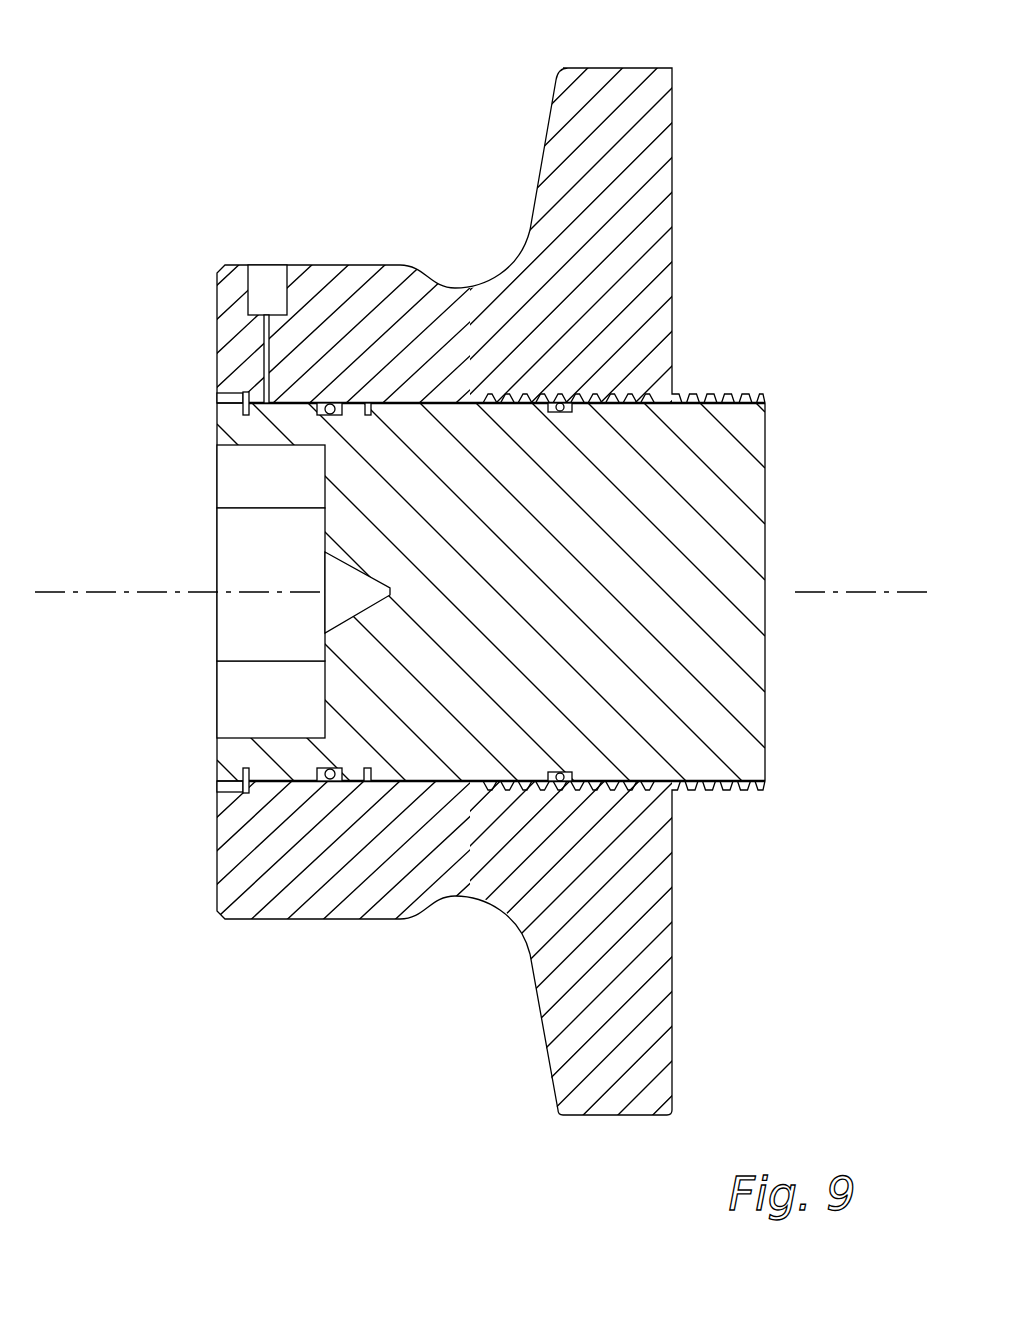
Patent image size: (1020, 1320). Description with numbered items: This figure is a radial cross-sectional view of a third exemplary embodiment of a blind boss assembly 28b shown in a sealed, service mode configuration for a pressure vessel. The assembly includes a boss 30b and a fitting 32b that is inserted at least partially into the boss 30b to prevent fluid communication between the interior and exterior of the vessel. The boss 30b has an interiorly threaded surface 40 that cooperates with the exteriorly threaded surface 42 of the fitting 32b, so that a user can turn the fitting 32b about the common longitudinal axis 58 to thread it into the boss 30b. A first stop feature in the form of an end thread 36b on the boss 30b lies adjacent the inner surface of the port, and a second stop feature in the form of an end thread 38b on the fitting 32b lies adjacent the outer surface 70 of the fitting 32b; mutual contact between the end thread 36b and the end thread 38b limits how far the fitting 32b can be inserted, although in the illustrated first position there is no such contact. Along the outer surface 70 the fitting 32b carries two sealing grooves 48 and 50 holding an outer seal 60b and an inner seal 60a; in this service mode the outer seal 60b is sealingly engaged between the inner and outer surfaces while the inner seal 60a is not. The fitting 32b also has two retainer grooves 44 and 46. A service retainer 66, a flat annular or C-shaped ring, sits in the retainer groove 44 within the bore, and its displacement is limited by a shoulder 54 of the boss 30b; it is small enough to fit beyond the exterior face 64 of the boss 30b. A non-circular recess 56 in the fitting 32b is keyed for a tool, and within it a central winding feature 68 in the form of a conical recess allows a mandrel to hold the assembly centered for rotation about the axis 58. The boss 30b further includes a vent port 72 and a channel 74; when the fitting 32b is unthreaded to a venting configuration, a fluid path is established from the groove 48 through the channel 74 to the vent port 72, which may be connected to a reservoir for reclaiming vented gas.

The blind boss assembly 28b is at (755, 128).
The boss 30b is at (545, 93).
The fitting 32b is at (770, 517).
The end thread 36b is at (492, 400).
The end thread 38b is at (595, 404).
The interiorly threaded surface 40 is at (566, 395).
The exteriorly threaded surface 42 is at (715, 395).
The retainer groove 44 is at (242, 412).
The retainer groove 46 is at (366, 412).
The sealing groove 48 is at (320, 415).
The sealing groove 50 is at (572, 412).
The shoulder 54 is at (248, 400).
The recess 56 is at (271, 584).
The longitudinal axis 58 is at (92, 600).
The inner seal 60a is at (557, 412).
The outer seal 60b is at (340, 400).
The exterior face 64 is at (215, 292).
The service retainer 66 is at (243, 400).
The central winding feature 68 is at (352, 582).
The outer surface 70 is at (444, 406).
The vent port 72 is at (286, 292).
The channel 74 is at (268, 355).